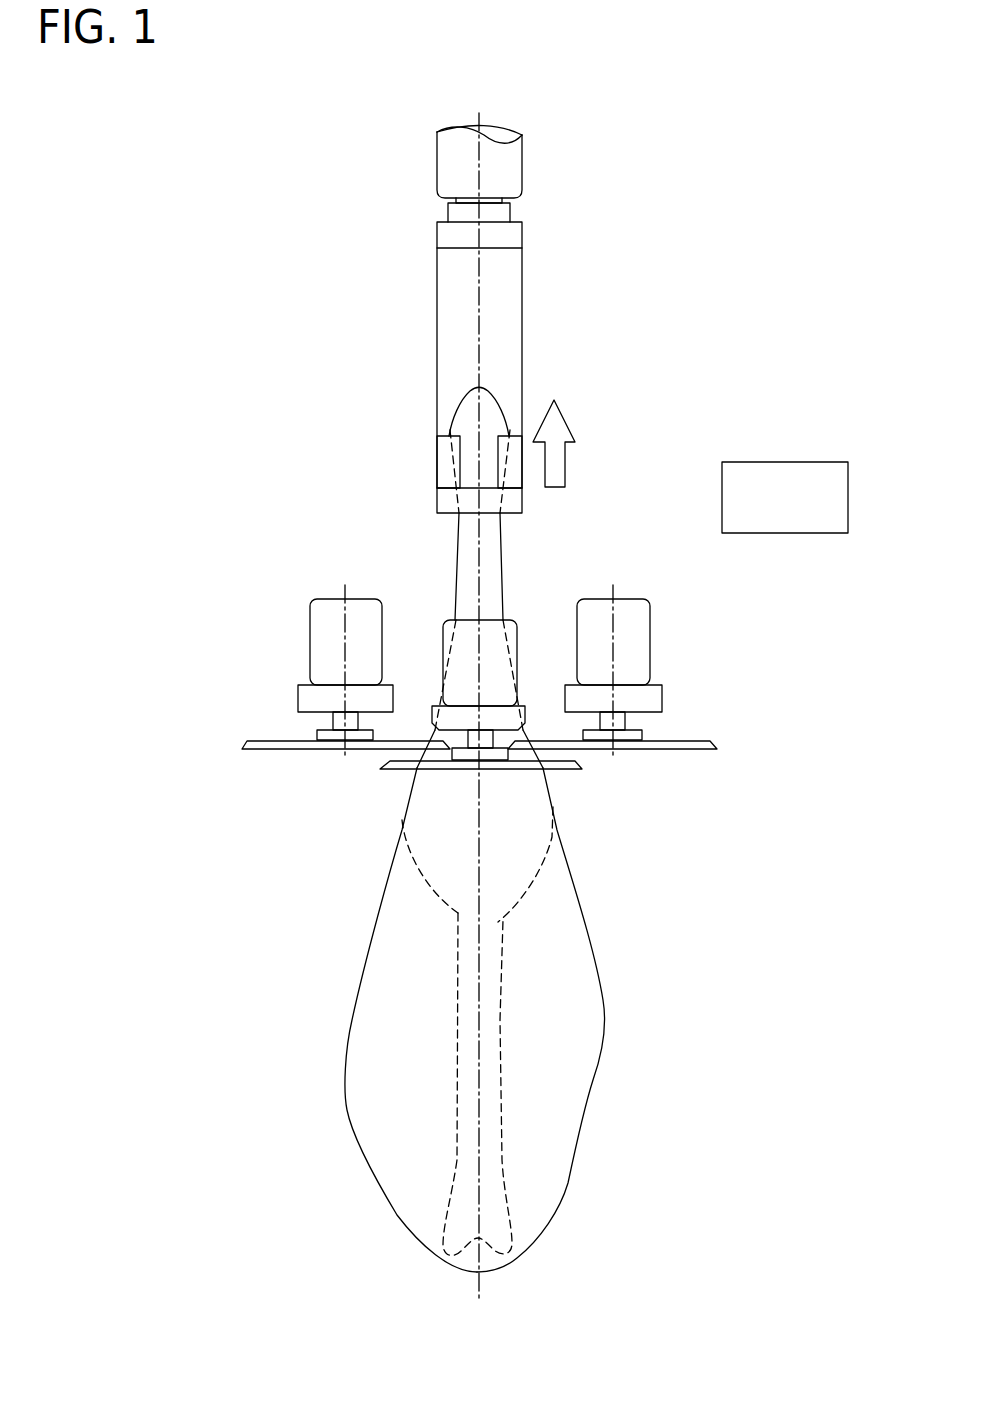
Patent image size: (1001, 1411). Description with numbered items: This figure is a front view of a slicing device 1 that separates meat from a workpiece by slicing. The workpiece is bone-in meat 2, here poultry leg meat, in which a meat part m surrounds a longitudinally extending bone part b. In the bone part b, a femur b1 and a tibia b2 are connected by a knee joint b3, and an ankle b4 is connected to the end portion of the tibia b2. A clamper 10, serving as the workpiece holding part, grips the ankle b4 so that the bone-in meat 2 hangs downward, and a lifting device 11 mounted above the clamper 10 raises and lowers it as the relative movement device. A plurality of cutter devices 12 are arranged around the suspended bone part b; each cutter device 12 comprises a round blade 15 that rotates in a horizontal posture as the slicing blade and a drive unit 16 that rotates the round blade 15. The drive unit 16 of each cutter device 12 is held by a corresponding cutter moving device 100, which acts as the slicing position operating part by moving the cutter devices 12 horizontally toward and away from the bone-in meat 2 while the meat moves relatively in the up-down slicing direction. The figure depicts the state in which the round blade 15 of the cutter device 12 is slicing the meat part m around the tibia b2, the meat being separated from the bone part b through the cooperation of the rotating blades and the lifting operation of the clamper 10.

The slicing device 1 is at (683, 162).
The bone-in meat 2 is at (377, 940).
The clamper 10 is at (437, 458).
The lifting device 11 is at (437, 155).
The cutter device 12 is at (310, 600).
The round blade 15 is at (245, 749).
The drive unit 16 is at (310, 658).
The cutter moving device 100 is at (793, 462).
The bone part b is at (500, 548).
The femur b1 is at (505, 1043).
The tibia b2 is at (457, 565).
The knee joint b3 is at (553, 833).
The ankle b4 is at (505, 410).
The meat part m is at (568, 1180).